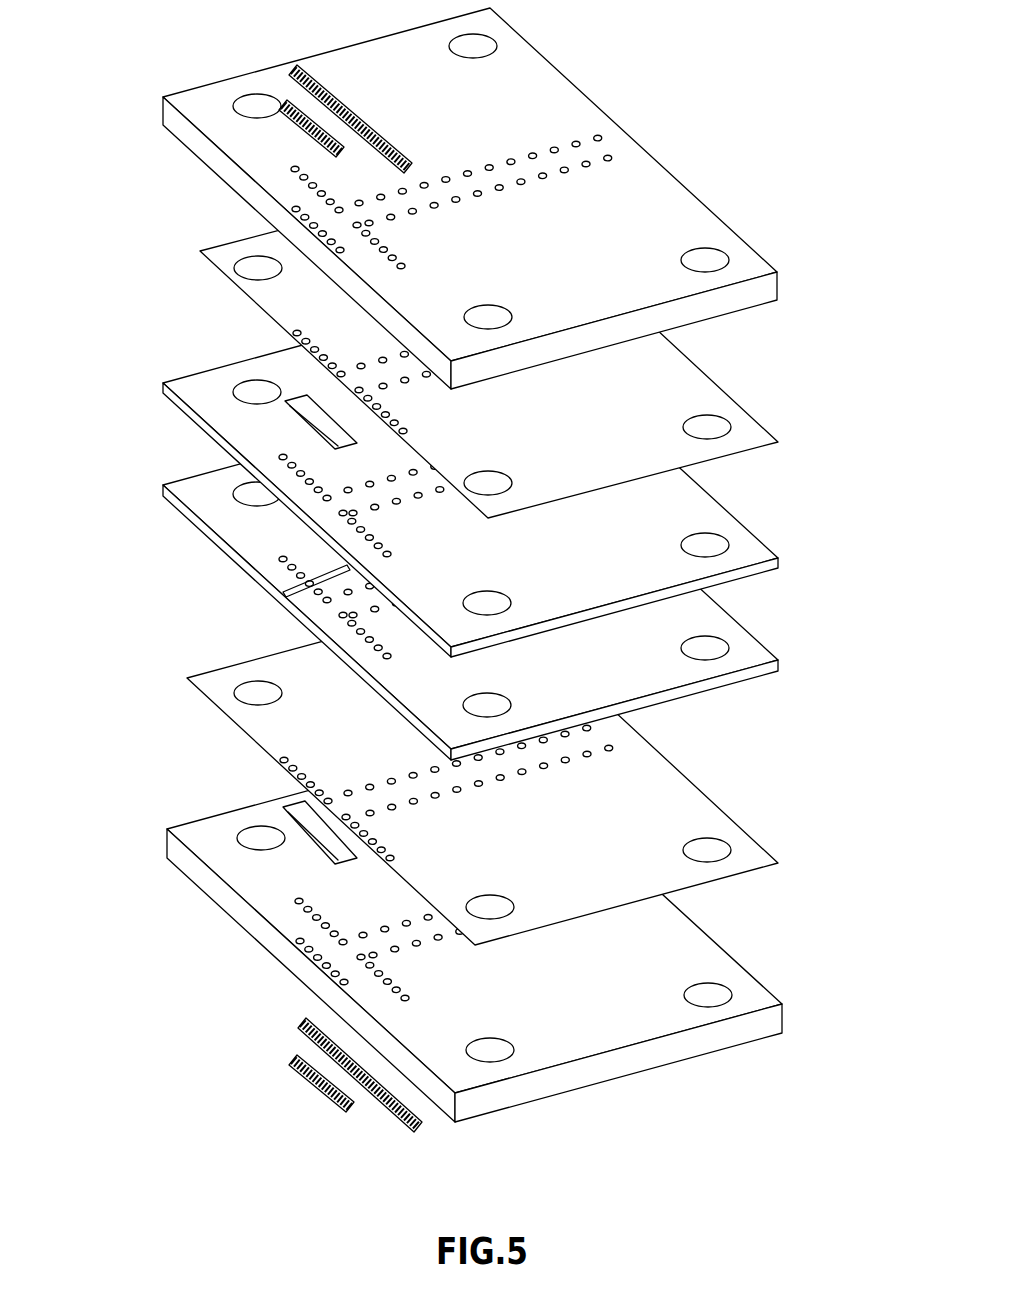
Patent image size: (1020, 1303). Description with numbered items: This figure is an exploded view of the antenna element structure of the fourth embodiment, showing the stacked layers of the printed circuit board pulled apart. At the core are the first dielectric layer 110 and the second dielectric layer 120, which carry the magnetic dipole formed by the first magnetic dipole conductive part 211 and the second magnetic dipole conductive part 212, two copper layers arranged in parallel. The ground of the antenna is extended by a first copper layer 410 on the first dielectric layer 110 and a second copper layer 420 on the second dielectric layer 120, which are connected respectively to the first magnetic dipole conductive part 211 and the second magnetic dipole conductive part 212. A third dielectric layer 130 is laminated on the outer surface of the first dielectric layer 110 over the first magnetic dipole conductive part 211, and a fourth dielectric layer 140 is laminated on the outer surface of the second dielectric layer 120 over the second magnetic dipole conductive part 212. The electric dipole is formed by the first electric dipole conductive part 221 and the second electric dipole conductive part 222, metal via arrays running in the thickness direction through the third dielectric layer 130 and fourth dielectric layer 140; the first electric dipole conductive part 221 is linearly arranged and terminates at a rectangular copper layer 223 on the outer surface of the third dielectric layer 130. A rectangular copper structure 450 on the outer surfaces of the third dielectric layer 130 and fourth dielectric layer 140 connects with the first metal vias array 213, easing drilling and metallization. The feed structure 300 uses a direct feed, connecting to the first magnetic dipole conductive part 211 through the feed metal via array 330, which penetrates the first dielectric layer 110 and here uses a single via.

The fourth dielectric layer 140 is at (477, 238).
The second copper layer 420 is at (298, 310).
The second dielectric layer 120 is at (474, 475).
The first dielectric layer 110 is at (460, 578).
The first copper layer 410 is at (307, 740).
The third dielectric layer 130 is at (477, 931).
The rectangular copper structure 450 is at (315, 97).
The rectangular copper layer 223 is at (293, 104).
The second electric dipole conductive part 222 is at (307, 207).
The first electric dipole conductive part 221 is at (307, 945).
The second magnetic dipole conductive part 212 is at (313, 428).
The first magnetic dipole conductive part 211 is at (283, 808).
The first metal vias array 213 is at (300, 490).
The feed structure 300 is at (283, 592).
The feed metal via array 330 is at (315, 617).